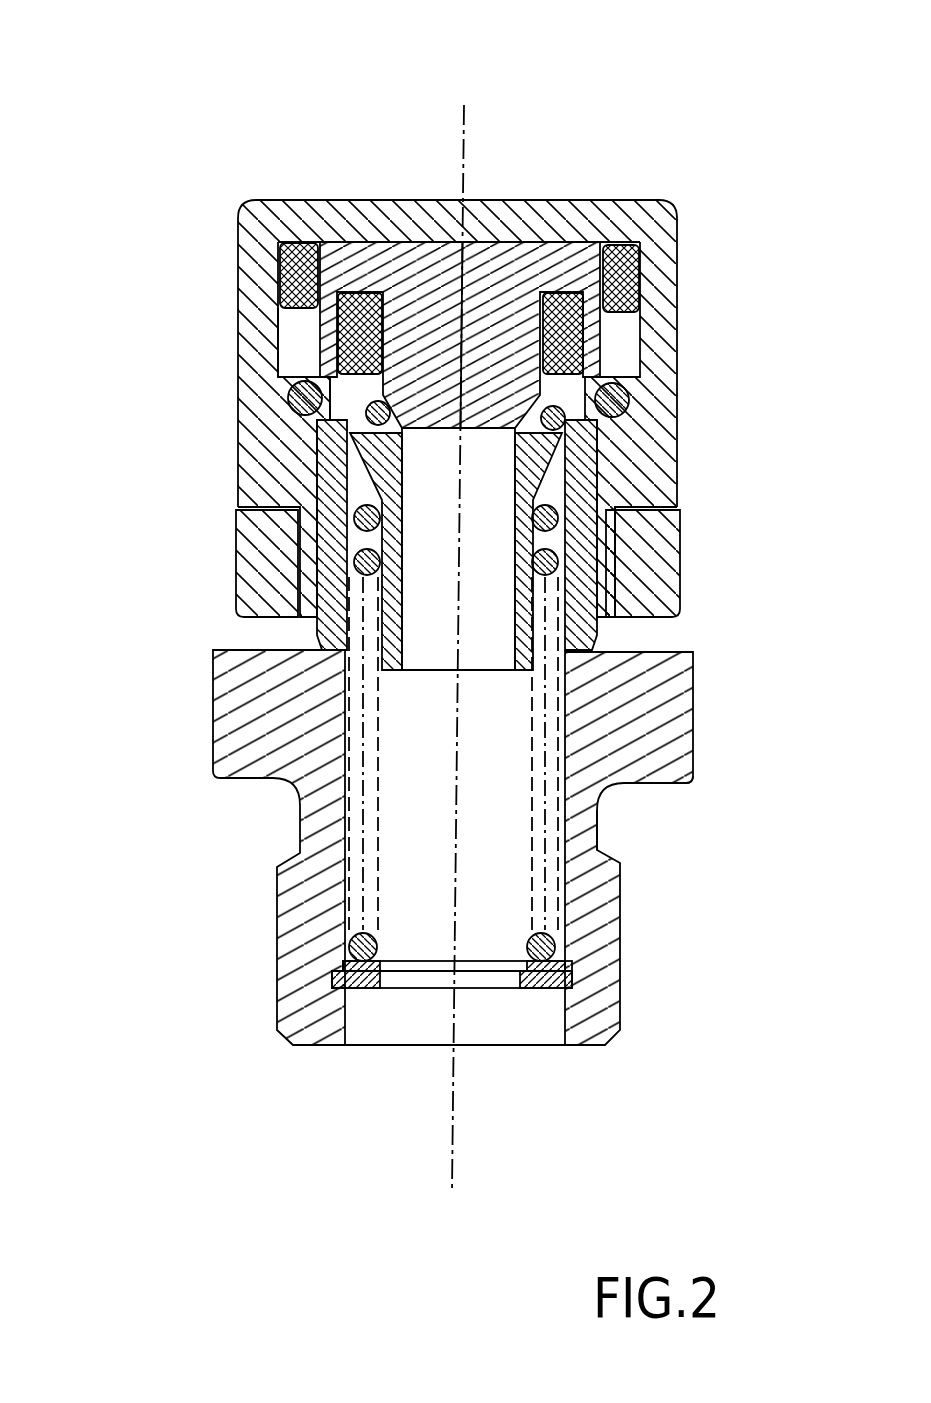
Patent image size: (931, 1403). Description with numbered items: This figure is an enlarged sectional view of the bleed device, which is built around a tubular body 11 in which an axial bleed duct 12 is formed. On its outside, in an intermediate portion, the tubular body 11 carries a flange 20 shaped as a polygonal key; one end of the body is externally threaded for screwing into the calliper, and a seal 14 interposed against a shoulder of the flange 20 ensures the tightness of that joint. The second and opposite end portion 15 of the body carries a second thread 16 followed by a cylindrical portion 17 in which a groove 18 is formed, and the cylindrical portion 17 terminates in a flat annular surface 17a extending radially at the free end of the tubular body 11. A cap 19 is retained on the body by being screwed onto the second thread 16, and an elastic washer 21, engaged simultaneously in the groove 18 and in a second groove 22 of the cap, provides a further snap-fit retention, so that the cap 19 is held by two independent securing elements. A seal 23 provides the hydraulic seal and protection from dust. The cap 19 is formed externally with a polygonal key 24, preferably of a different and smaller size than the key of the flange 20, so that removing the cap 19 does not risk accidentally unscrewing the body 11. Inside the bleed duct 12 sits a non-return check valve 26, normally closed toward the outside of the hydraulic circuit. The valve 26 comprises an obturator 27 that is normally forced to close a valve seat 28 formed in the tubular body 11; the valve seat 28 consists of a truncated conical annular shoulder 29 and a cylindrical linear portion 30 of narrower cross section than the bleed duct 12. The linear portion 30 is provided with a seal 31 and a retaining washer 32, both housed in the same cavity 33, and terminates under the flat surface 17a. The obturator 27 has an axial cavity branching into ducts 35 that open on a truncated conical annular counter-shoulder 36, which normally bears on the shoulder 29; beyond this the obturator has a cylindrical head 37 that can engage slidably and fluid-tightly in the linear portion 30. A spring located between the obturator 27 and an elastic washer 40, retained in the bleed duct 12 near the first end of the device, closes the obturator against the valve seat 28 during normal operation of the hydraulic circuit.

The tubular body 11 is at (580, 812).
The axial bleed duct 12 is at (410, 833).
The seal 14 is at (663, 785).
The second end portion 15 is at (582, 584).
The second thread 16 is at (645, 558).
The cylindrical portion 17 is at (598, 458).
The flat annular surface 17a is at (583, 242).
The groove 18 is at (633, 376).
The cap 19 is at (240, 343).
The flange 20 is at (660, 712).
The elastic washer 21 is at (275, 385).
The second groove 22 is at (298, 358).
The seal 23 is at (293, 243).
The polygonal key 24 is at (230, 550).
The non-return check valve 26 is at (552, 262).
The obturator 27 is at (430, 268).
The valve seat 28 is at (575, 395).
The truncated conical annular shoulder 29 is at (317, 447).
The cylindrical linear portion 30 is at (408, 378).
The seal 31 is at (262, 322).
The retaining washer 32 is at (357, 292).
The cavity 33 is at (618, 282).
The ducts 35 is at (560, 465).
The truncated conical annular counter-shoulder 36 is at (572, 437).
The cylindrical head 37 is at (493, 305).
The elastic washer 40 is at (377, 988).